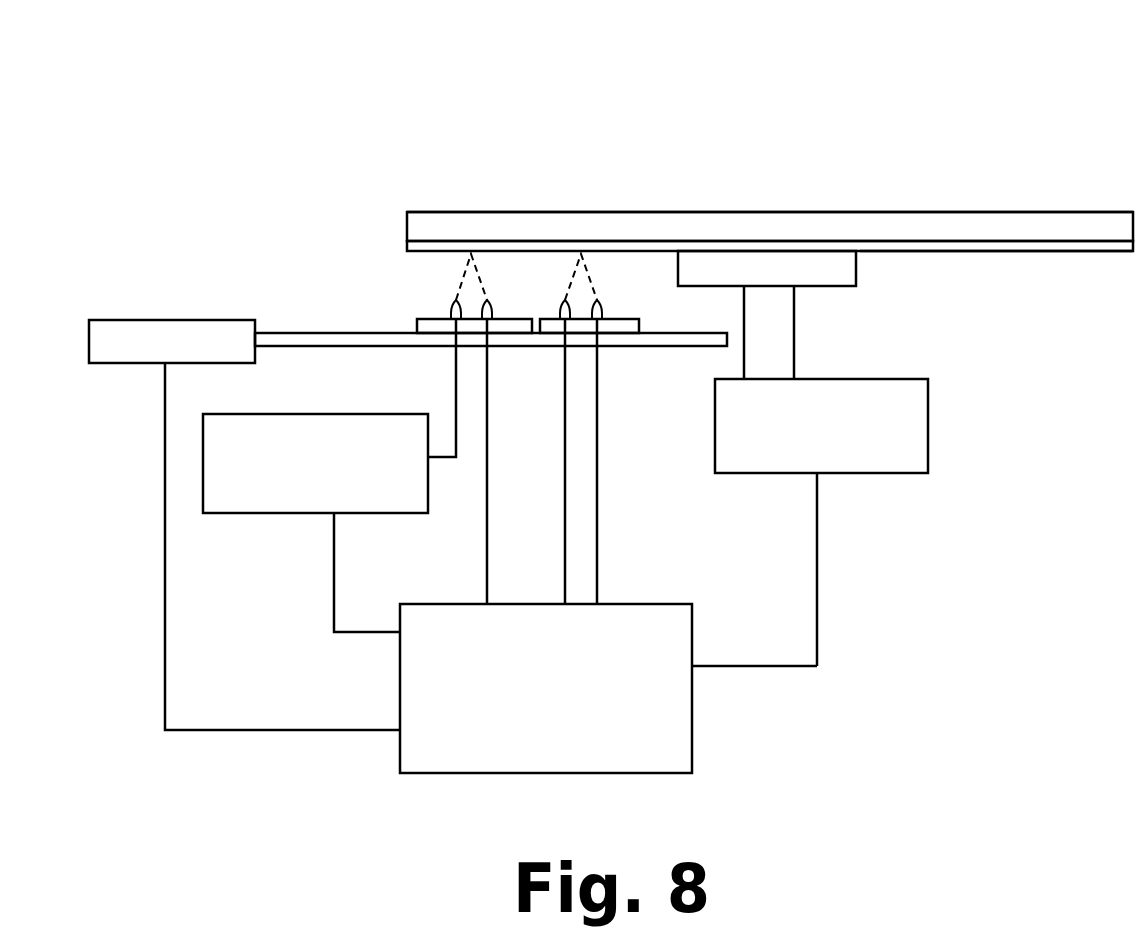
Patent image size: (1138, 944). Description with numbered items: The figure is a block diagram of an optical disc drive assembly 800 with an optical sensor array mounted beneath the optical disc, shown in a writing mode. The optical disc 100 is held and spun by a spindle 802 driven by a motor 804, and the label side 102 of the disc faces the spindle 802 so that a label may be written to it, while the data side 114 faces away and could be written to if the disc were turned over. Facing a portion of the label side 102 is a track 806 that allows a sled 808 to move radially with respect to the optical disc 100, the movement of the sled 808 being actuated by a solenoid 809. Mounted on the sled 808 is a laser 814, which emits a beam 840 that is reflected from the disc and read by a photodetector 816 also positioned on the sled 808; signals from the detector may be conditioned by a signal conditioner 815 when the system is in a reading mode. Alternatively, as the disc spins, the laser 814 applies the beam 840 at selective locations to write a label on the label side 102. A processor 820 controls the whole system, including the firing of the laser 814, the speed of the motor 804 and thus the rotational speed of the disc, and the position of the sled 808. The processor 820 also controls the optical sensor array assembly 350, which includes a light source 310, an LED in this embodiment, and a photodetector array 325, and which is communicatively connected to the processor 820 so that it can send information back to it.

The optical disc drive assembly 800 is at (565, 74).
The optical disc 100 is at (1021, 222).
The data side 114 is at (800, 202).
The label side 102 is at (952, 261).
The spindle 802 is at (838, 287).
The motor 804 is at (880, 474).
The track 806 is at (278, 327).
The sled 808 is at (445, 330).
The solenoid 809 is at (130, 320).
The laser 814 is at (490, 300).
The photodetector 816 is at (453, 308).
The beam 840 is at (452, 273).
The optical sensor array assembly 350 is at (612, 327).
The photodetector array 325 is at (558, 306).
The light source 310 is at (603, 306).
The signal conditioner 815 is at (383, 514).
The processor 820 is at (692, 705).